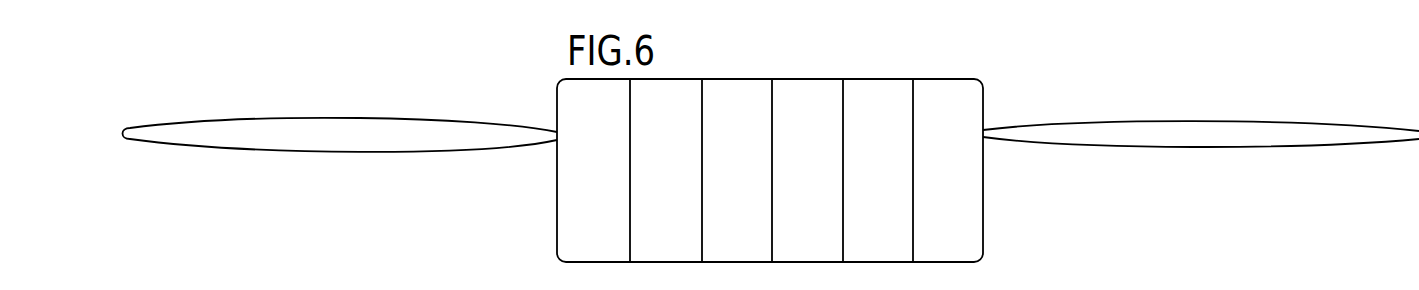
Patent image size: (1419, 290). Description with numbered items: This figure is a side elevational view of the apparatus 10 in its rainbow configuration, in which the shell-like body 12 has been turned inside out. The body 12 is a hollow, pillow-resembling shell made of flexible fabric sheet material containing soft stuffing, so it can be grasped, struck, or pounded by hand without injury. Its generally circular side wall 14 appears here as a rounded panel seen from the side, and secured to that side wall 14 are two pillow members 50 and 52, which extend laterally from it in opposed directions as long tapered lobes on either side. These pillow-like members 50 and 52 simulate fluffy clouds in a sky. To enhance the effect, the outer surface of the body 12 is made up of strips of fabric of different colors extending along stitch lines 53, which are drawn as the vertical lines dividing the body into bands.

The apparatus 10 is at (962, 77).
The shell-like body 12 is at (936, 77).
The side wall 14 is at (878, 92).
The pillow member 50 is at (488, 150).
The pillow member 52 is at (1157, 148).
The stitch lines 53 is at (772, 92).